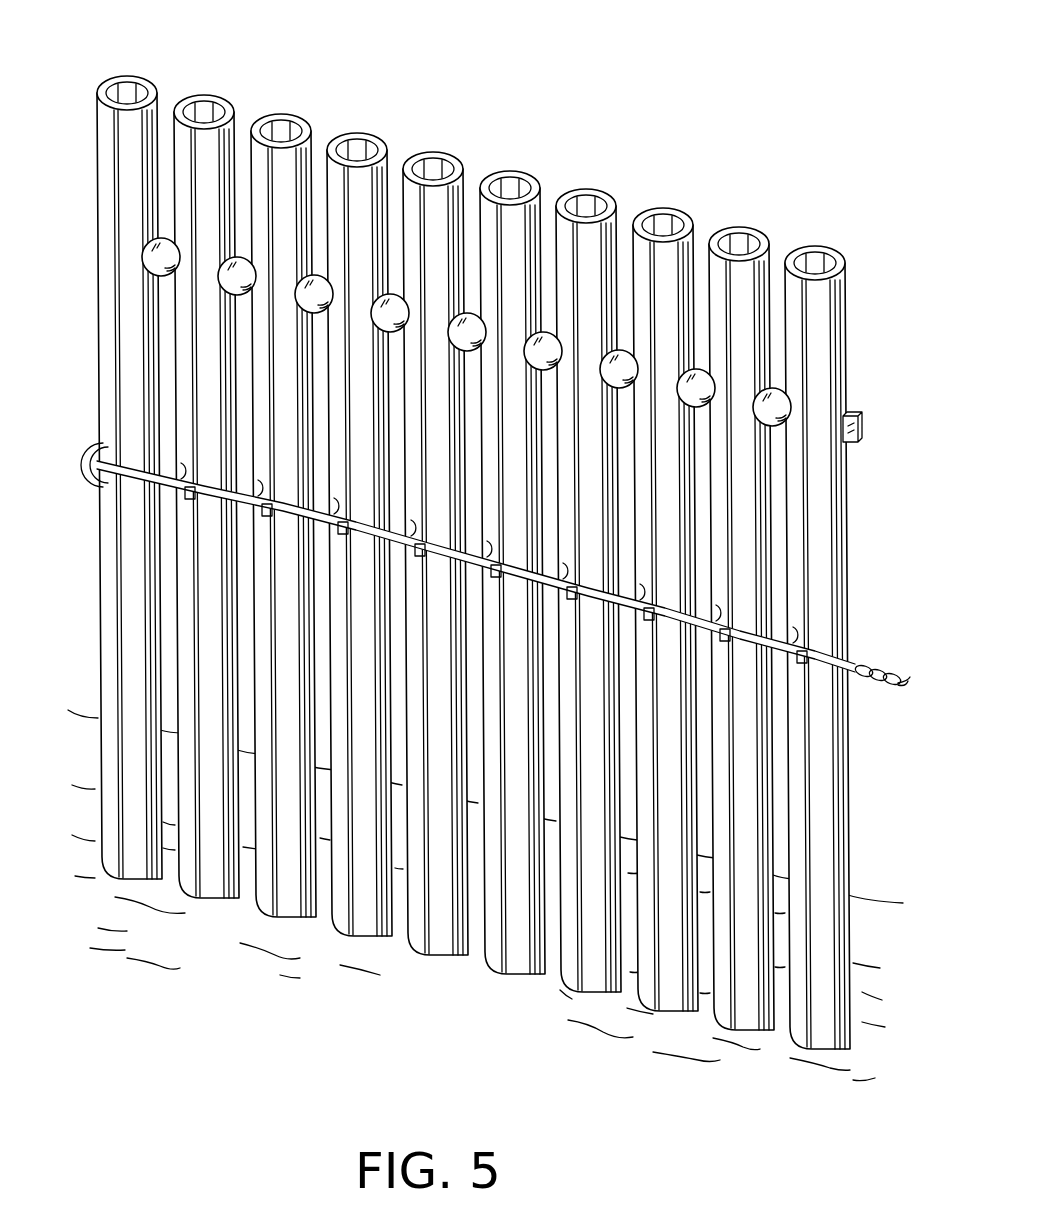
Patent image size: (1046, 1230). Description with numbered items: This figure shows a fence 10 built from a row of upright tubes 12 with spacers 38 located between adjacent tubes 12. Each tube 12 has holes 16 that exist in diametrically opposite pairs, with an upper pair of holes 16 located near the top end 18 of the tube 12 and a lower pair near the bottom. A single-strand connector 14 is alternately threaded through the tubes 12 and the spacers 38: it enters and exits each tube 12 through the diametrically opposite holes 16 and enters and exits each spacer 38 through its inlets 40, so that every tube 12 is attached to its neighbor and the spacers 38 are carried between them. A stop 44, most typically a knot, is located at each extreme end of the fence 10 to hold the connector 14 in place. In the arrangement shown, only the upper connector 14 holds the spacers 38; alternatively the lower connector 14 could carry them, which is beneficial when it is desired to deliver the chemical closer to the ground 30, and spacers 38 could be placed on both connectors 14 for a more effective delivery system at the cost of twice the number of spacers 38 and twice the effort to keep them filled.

The fence 10 is at (498, 549).
The tube 12 is at (846, 292).
The connector 14 is at (866, 683).
The hole 16 is at (800, 626).
The top end 18 is at (662, 230).
The ground 30 is at (485, 895).
The spacer 38 is at (545, 338).
The inlet 40 is at (873, 497).
The stop 44 is at (855, 412).